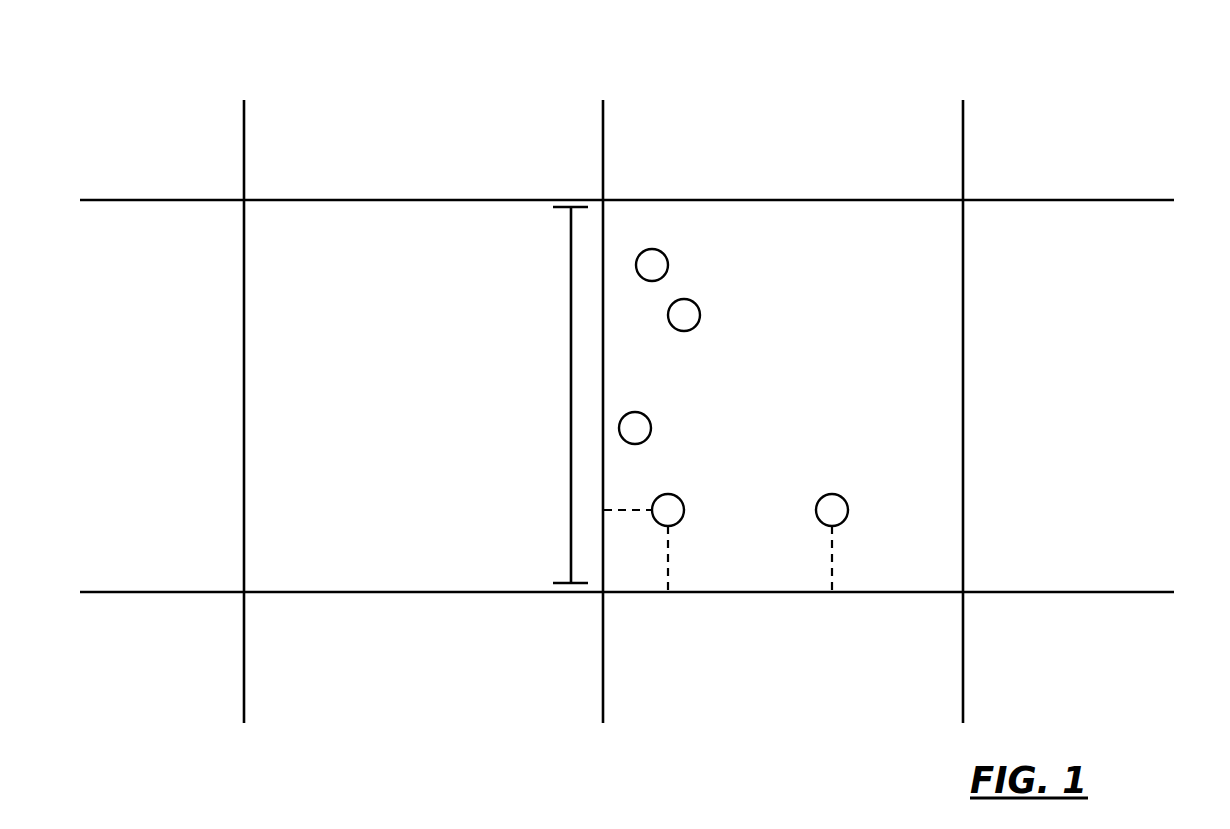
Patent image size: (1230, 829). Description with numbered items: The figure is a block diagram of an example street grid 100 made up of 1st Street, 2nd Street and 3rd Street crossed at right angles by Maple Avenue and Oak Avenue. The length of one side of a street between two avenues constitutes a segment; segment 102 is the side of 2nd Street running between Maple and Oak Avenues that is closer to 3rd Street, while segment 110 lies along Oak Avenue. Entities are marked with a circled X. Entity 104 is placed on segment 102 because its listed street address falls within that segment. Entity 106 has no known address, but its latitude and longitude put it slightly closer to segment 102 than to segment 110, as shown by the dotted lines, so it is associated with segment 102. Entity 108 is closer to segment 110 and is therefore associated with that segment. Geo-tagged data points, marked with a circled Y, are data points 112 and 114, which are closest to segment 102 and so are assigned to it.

The street grid 100 is at (1044, 108).
The segment 102 is at (556, 330).
The entity 104 is at (667, 259).
The entity 106 is at (676, 495).
The entity 108 is at (839, 495).
The segment 110 is at (750, 593).
The data point 112 is at (650, 423).
The data point 114 is at (699, 310).